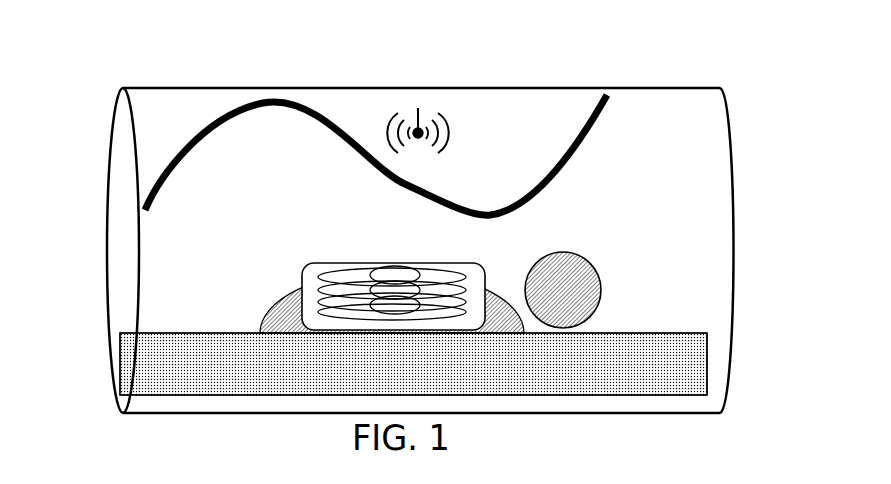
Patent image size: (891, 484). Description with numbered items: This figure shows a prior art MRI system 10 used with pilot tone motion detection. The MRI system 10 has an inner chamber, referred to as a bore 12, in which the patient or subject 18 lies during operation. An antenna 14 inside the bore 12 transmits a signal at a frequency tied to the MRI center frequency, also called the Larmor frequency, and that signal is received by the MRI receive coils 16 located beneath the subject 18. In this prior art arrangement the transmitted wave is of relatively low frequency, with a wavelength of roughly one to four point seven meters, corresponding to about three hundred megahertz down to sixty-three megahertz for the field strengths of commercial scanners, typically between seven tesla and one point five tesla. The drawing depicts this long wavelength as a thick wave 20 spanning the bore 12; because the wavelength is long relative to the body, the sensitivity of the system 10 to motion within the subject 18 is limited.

The MRI system 10 is at (768, 79).
The bore 12 is at (146, 133).
The antenna 14 is at (418, 108).
The MRI receive coils 16 is at (130, 347).
The subject 18 is at (588, 293).
The RF transmit field 20 is at (203, 135).